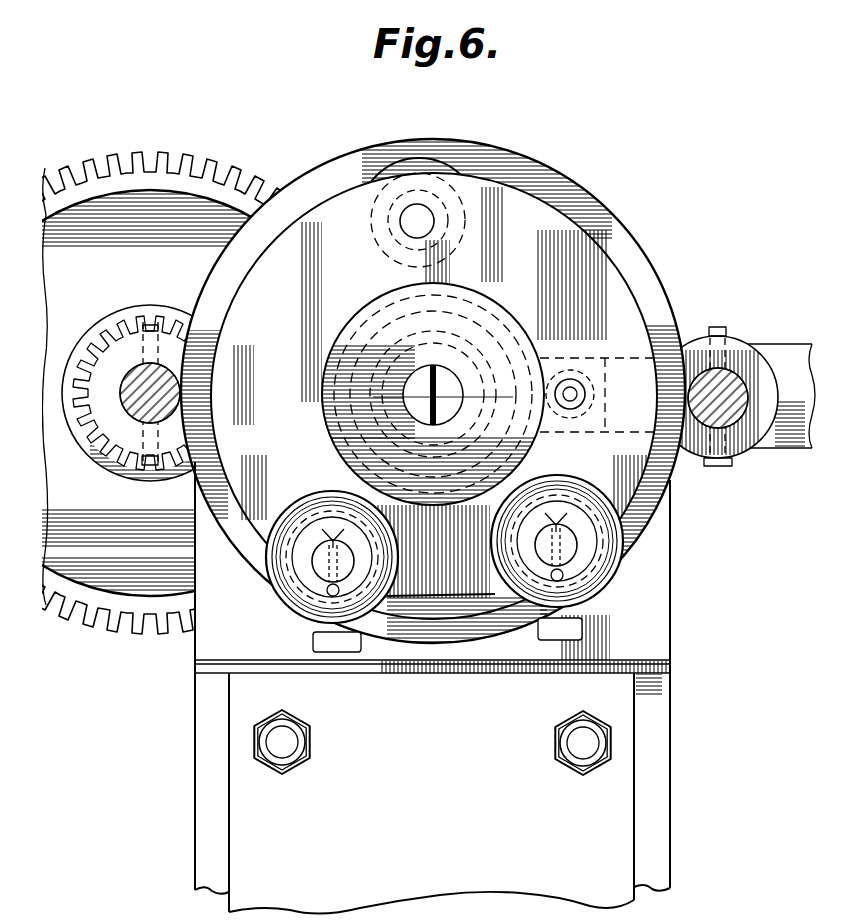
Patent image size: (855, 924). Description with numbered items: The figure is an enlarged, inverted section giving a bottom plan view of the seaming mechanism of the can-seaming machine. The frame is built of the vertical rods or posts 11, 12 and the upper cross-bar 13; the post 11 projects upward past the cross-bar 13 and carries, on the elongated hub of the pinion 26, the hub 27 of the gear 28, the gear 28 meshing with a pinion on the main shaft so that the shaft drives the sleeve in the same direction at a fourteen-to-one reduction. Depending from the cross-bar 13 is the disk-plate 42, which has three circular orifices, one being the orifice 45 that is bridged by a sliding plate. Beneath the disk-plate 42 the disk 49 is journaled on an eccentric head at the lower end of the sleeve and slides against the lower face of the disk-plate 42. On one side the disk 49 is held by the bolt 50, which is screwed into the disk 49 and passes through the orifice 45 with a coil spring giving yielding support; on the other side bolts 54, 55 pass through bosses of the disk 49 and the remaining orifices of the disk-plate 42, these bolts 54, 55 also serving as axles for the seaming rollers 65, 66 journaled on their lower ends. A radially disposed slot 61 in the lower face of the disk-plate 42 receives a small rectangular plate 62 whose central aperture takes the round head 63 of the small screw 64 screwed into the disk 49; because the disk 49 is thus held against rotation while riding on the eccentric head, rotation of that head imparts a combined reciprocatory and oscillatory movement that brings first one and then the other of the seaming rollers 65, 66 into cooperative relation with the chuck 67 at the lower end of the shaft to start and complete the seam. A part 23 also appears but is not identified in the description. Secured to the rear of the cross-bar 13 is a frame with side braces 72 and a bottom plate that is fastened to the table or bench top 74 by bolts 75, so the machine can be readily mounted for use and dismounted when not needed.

The vertical rod or post 11 is at (127, 383).
The vertical rod or post 12 is at (732, 370).
The upper cross-bar 13 is at (113, 425).
The arm 23 is at (794, 445).
The pinion 26 is at (127, 462).
The hub 27 is at (150, 305).
The gear 28 is at (80, 597).
The disk-plate 42 is at (332, 163).
The orifice 45 is at (421, 156).
The disk 49 is at (444, 423).
The bolt 50 is at (425, 220).
The bolt 54 is at (320, 545).
The bolt 55 is at (565, 542).
The radially disposed slot or groove 61 is at (670, 335).
The small rectangular plate 62 is at (613, 390).
The round head 63 is at (583, 371).
The small screw 64 is at (587, 399).
The seaming roller 65 is at (286, 598).
The seaming roller 66 is at (621, 576).
The chuck 67 is at (348, 409).
The side braces 72 is at (194, 798).
The table or bench top 74 is at (431, 853).
The bolts 75 is at (292, 744).